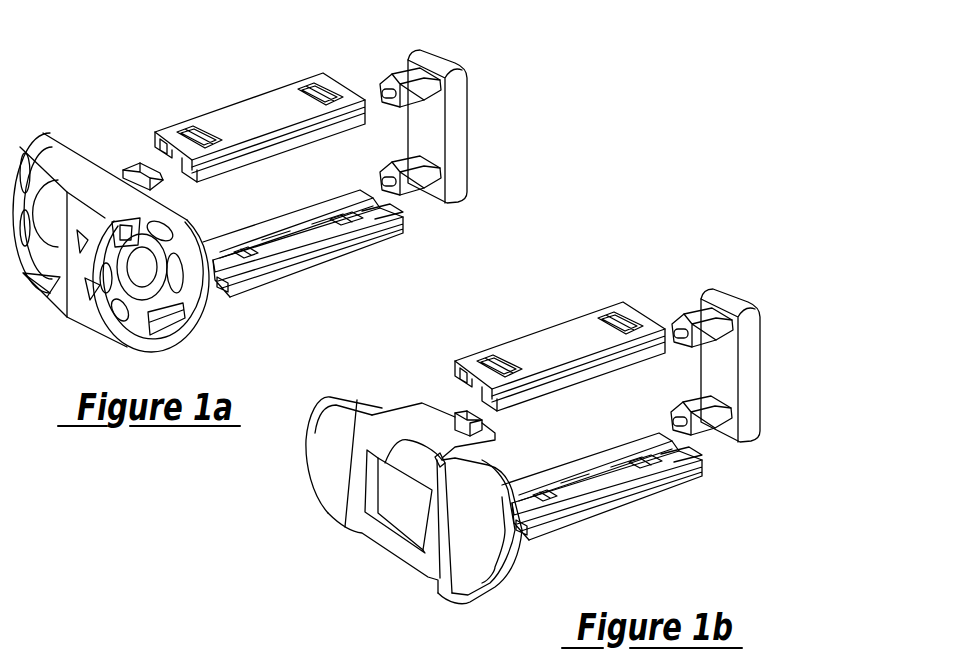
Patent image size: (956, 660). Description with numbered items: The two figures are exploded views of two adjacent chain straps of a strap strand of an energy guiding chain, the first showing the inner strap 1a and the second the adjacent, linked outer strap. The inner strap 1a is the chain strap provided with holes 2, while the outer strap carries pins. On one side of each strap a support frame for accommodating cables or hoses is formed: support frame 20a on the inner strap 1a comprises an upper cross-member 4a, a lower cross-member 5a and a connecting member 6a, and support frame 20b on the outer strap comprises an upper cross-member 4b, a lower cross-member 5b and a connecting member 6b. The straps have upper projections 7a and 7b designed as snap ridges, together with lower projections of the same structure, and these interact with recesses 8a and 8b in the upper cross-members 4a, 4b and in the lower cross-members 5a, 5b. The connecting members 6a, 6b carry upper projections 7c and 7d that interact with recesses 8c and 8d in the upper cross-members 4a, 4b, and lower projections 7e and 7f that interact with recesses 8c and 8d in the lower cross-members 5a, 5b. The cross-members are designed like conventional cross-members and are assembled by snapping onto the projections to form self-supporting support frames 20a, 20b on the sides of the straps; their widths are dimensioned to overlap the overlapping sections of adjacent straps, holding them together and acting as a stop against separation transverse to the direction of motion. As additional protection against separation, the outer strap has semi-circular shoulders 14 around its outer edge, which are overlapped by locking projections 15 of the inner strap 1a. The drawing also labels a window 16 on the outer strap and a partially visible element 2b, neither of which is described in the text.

In FIG. 1A, the inner strap 1a is at (78, 158).
In FIG. 1A, the holes 2 is at (137, 334).
In FIG. 1A, the locking projections 15 is at (80, 255).
In FIG. 1A, the upper cross-member 4a is at (242, 110).
In FIG. 1A, the lower cross-member 5a is at (291, 211).
In FIG. 1A, the upper projection 7a is at (140, 163).
In FIG. 1A, the upper projection 7c is at (403, 78).
In FIG. 1A, the lower projection 7e is at (431, 191).
In FIG. 1A, the recess 8a is at (193, 133).
In FIG. 1A, the recess 8c is at (325, 92).
In FIG. 1A, the connecting member 6a is at (467, 125).
In FIG. 1A, the support frame 20a is at (486, 91).
In FIG. 1B, the semi-circular shoulders 14 is at (306, 447).
In FIG. 1B, the window opening 16 is at (362, 532).
In FIG. 1B, the upper cross-member 4b is at (592, 360).
In FIG. 1B, the lower cross-member 5b is at (610, 510).
In FIG. 1B, the upper projection 7b is at (460, 412).
In FIG. 1B, the upper projection 7d is at (693, 317).
In FIG. 1B, the lower projection 7f is at (717, 424).
In FIG. 1B, the recess 8b is at (506, 364).
In FIG. 1B, the recess 8d is at (625, 323).
In FIG. 1B, the connecting member 6b is at (737, 290).
In FIG. 1B, the support frame 20b is at (763, 343).
In FIG. 1B, the boot front ring 2b is at (333, 653).